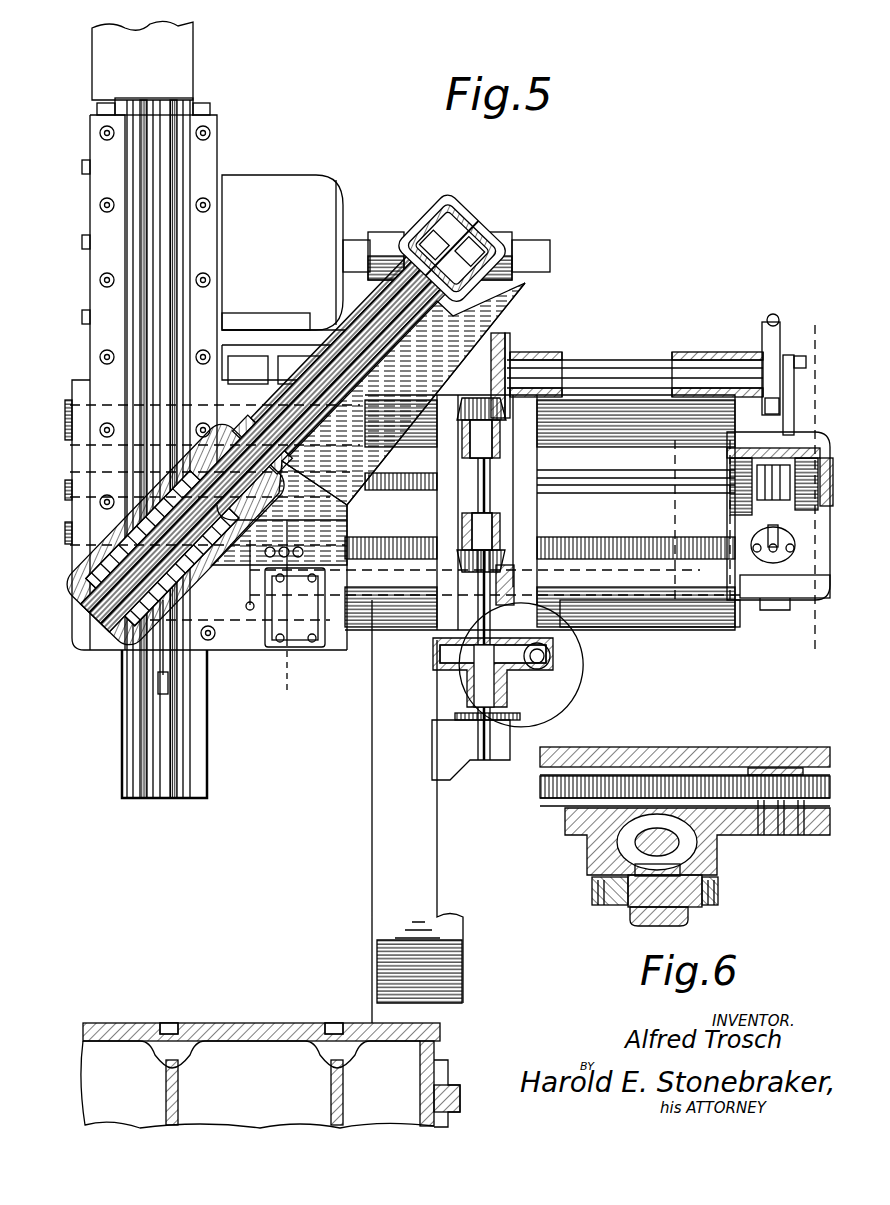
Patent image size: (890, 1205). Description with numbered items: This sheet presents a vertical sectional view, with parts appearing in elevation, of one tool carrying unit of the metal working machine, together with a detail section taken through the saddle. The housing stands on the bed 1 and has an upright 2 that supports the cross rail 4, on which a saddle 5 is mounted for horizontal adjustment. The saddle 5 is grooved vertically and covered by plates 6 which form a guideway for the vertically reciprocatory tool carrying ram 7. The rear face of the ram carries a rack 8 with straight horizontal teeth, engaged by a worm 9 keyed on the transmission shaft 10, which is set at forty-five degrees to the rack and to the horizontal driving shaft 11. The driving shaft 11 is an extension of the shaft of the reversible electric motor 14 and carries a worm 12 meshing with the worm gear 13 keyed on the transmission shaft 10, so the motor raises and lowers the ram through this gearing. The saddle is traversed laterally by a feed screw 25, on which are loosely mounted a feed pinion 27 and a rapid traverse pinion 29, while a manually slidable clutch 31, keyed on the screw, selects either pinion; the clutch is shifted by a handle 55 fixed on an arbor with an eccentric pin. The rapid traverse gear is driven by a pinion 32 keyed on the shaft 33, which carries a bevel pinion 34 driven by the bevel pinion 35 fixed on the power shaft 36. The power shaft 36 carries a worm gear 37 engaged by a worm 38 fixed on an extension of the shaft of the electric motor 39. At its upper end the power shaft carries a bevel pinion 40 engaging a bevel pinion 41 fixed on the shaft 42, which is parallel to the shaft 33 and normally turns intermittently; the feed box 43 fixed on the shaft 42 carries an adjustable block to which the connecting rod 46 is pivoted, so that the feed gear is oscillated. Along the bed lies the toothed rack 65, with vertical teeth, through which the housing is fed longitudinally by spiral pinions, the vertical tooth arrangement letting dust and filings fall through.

In FIG. 5, the bed 1 is at (268, 1028).
In FIG. 5, the upright 2 is at (385, 845).
In FIG. 5, the cross rail 4 is at (645, 615).
In FIG. 6, the cross rail 4 is at (780, 752).
In FIG. 5, the saddle 5 is at (347, 640).
In FIG. 6, the saddle 5 is at (820, 835).
In FIG. 5, the plates 6 is at (208, 262).
In FIG. 6, the plates 6 is at (715, 898).
In FIG. 5, the tool carrying ram 7 is at (190, 757).
In FIG. 6, the tool carrying ram 7 is at (645, 924).
In FIG. 6, the rack 8 is at (705, 868).
In FIG. 5, the worm 9 is at (168, 620).
In FIG. 6, the worm 9 is at (632, 843).
In FIG. 5, the transmission shaft 10 is at (330, 390).
In FIG. 5, the driving shaft 11 is at (780, 516).
In FIG. 5, the worm 12 is at (285, 599).
In FIG. 5, the worm gear 13 is at (448, 227).
In FIG. 5, the reversible electric motor 14 is at (318, 190).
In FIG. 5, the feed screws 25 is at (636, 478).
In FIG. 6, the feed screws 25 is at (693, 780).
In FIG. 5, the feed pinion 27 is at (805, 462).
In FIG. 5, the rapid traverse pinion 29 is at (738, 490).
In FIG. 5, the clutch 31 is at (770, 500).
In FIG. 5, the pinion 32 is at (745, 615).
In FIG. 5, the shaft 33 is at (676, 620).
In FIG. 5, the bevel pinion 34 is at (520, 600).
In FIG. 5, the bevel pinion 35 is at (460, 562).
In FIG. 5, the power shaft 36 is at (480, 620).
In FIG. 5, the worm gear 37 is at (460, 668).
In FIG. 5, the worm 38 is at (540, 670).
In FIG. 5, the electric motor 39 is at (580, 660).
In FIG. 5, the bevel pinion 40 is at (472, 400).
In FIG. 5, the bevel pinion 41 is at (506, 350).
In FIG. 5, the shaft 42 is at (596, 364).
In FIG. 5, the feed box 43 is at (766, 338).
In FIG. 5, the connecting rod 46 is at (792, 392).
In FIG. 5, the handle 55 is at (780, 535).
In FIG. 5, the toothed rack 65 is at (462, 1095).